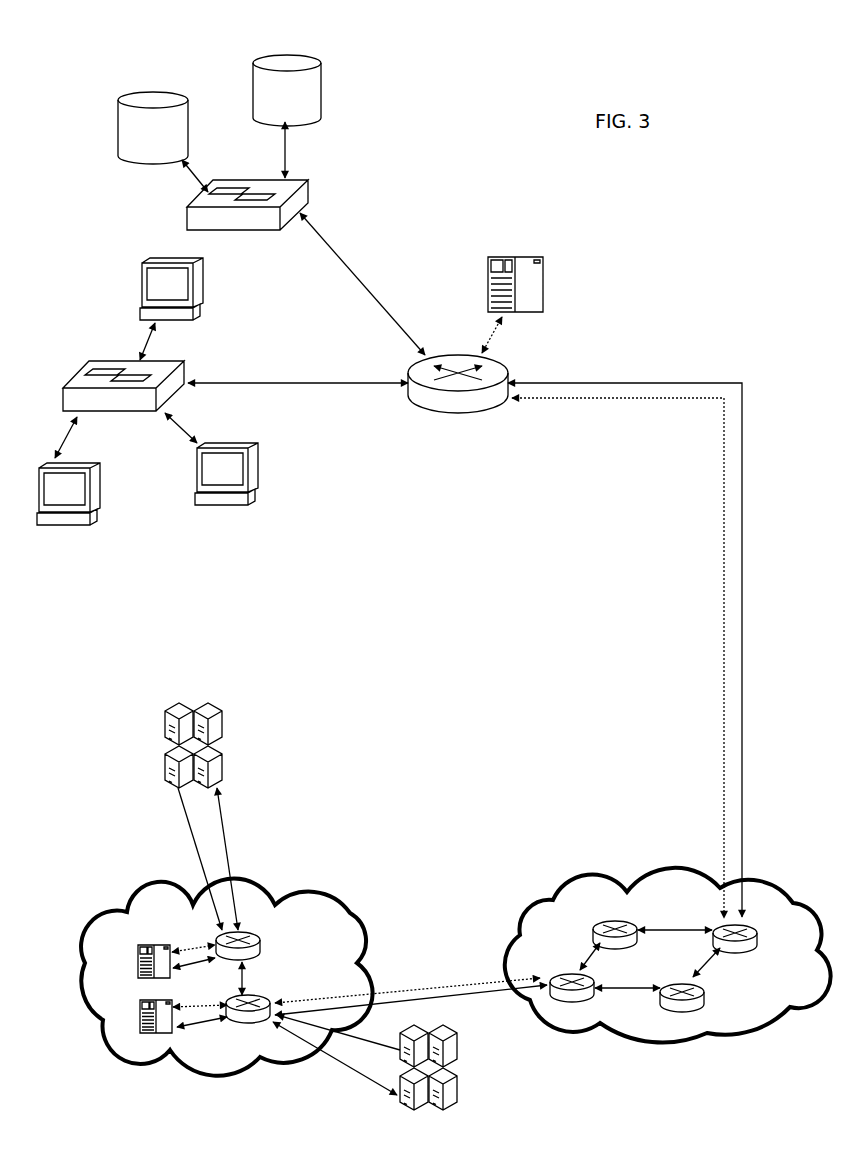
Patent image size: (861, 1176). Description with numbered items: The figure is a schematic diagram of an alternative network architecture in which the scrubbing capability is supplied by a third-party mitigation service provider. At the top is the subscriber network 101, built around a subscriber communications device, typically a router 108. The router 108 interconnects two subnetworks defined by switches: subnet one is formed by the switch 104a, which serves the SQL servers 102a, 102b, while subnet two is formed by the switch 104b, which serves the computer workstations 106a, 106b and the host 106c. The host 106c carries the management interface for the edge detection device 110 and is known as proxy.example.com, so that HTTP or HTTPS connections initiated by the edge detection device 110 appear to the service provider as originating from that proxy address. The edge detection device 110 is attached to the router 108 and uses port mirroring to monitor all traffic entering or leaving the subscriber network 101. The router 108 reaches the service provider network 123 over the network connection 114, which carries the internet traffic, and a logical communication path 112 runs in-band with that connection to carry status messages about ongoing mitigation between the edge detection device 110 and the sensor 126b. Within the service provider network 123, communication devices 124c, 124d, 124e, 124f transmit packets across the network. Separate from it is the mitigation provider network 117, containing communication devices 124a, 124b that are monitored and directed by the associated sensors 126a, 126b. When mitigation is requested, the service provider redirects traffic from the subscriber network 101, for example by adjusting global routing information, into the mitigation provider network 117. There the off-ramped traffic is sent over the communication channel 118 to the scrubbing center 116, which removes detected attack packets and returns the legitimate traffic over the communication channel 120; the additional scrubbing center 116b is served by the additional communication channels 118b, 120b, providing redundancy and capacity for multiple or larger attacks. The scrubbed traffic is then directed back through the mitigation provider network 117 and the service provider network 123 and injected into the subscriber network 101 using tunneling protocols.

The subscriber network 101 is at (407, 75).
The SQL server 102a is at (287, 62).
The SQL server 102b is at (152, 100).
The switch 104a is at (310, 192).
The switch 104b is at (107, 362).
The computer workstation 106a is at (172, 260).
The computer workstation 106b is at (230, 445).
The host 106c is at (73, 462).
The subscriber communications device 108 is at (458, 357).
The edge detection device 110 is at (487, 257).
The logical communication path 112 is at (723, 503).
The network connection 114 is at (592, 383).
The scrubbing center 116 is at (223, 723).
The scrubbing center 116b is at (458, 1090).
The mitigation provider network 117 is at (130, 892).
The communication channel 118 is at (227, 878).
The communication channel 118b is at (332, 1063).
The communication channel 120 is at (202, 858).
The communication channel 120b is at (385, 1043).
The service provider network 123 is at (667, 868).
The communication device 124a is at (263, 945).
The communication device 124b is at (263, 998).
The communication device 124c is at (627, 920).
The communication device 124d is at (593, 980).
The communication device 124e is at (705, 993).
The communication device 124f is at (760, 937).
The sensor 126a is at (137, 962).
The sensor 126b is at (140, 1022).